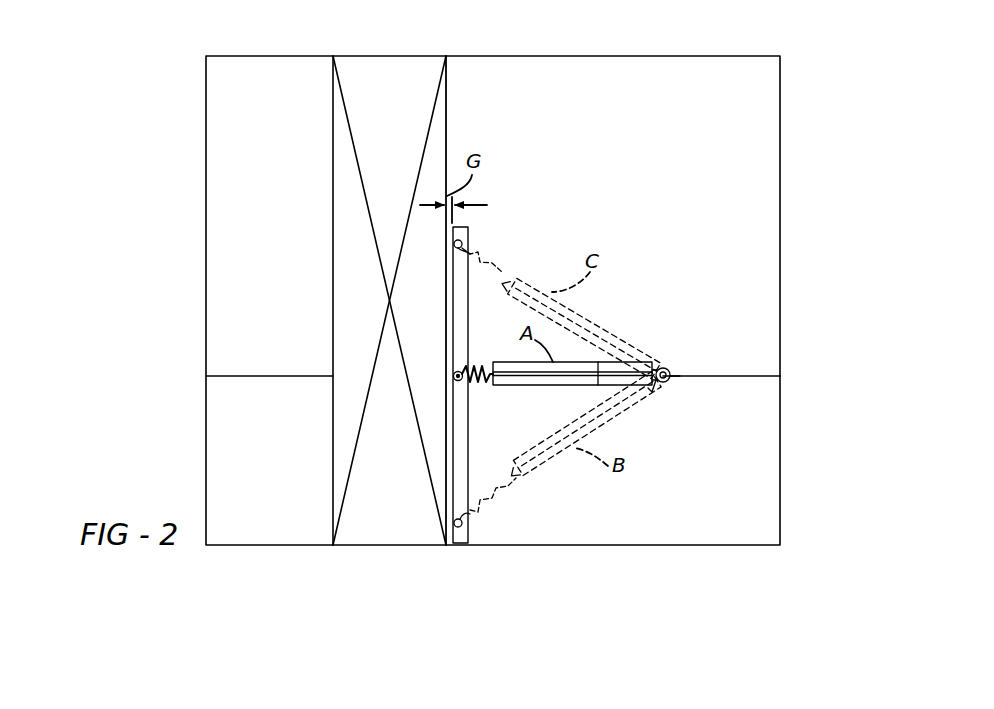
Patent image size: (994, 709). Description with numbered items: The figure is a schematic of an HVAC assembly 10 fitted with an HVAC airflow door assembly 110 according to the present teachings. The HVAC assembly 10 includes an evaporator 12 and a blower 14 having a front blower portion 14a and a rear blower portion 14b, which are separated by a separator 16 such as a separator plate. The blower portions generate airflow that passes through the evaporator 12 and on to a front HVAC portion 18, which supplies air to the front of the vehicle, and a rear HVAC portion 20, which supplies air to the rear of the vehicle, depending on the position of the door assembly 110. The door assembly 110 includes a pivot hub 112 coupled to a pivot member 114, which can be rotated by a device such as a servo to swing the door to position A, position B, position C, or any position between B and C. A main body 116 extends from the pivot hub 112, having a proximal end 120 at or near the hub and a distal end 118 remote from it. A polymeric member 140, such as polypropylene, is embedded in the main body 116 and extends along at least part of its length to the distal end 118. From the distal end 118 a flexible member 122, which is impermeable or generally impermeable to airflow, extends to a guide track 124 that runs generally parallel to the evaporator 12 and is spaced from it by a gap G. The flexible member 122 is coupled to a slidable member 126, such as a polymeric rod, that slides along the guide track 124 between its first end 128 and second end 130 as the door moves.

The HVAC assembly 10 is at (136, 146).
The evaporator 12 is at (447, 108).
The blower 14 is at (186, 308).
The front blower portion 14a is at (238, 112).
The rear blower portion 14b is at (215, 478).
The separator 16 is at (243, 374).
The front HVAC portion 18 is at (748, 174).
The rear HVAC portion 20 is at (753, 540).
The HVAC airflow door assembly 110 is at (624, 291).
The pivot hub 112 is at (672, 380).
The pivot member 114 is at (670, 372).
The main body 116 is at (545, 386).
The distal end 118 is at (488, 386).
The proximal end 120 is at (645, 392).
The flexible member 122 is at (505, 268).
The guide track 124 is at (468, 530).
The slidable member 126 is at (458, 370).
The first end 128 is at (455, 543).
The second end 130 is at (458, 226).
The polymeric member 140 is at (598, 375).